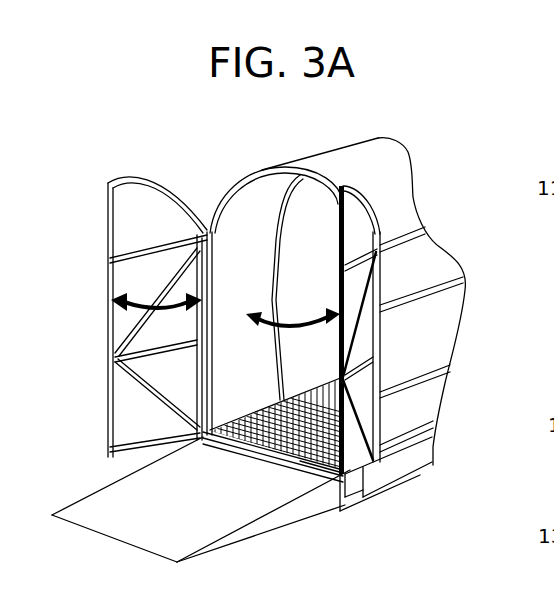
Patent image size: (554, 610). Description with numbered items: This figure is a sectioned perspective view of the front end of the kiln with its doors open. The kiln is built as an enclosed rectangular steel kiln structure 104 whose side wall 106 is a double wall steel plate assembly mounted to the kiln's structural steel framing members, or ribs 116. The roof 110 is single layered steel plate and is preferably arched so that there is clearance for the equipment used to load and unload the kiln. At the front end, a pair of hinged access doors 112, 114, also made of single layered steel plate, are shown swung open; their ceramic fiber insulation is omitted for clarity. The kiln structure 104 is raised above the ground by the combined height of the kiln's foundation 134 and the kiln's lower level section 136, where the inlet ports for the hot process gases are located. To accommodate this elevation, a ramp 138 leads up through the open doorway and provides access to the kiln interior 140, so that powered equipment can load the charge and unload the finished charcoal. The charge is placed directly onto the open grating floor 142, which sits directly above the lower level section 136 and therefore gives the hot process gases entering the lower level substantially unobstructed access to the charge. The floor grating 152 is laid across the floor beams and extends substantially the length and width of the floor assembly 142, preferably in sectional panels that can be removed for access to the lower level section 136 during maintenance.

The kiln structure 104 is at (276, 321).
The side wall 106 is at (435, 343).
The roof 110 is at (332, 156).
The hinged access door 112 is at (143, 202).
The hinged access door 114 is at (358, 218).
The ribs 116 is at (422, 288).
The foundation 134 is at (371, 497).
The lower level section 136 is at (394, 472).
The ramp 138 is at (113, 496).
The kiln interior 140 is at (280, 287).
The open grating floor 142 is at (261, 445).
The floor grating 152 is at (330, 448).